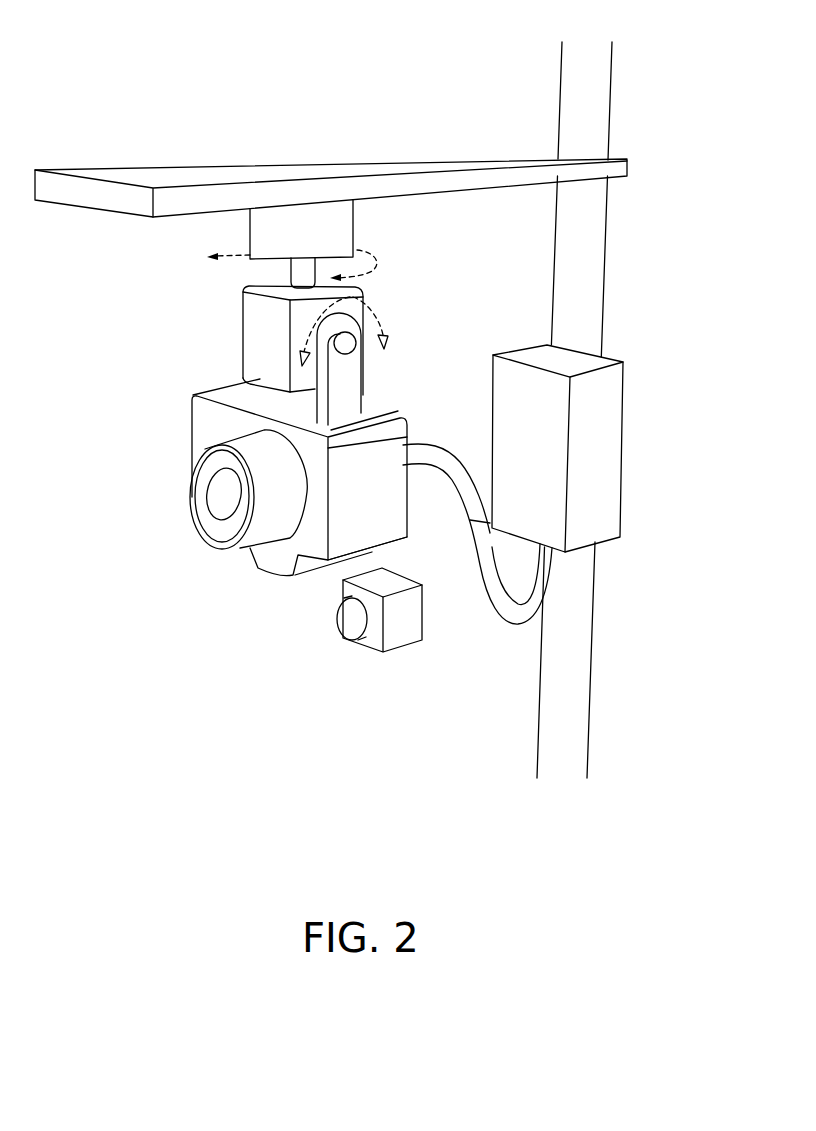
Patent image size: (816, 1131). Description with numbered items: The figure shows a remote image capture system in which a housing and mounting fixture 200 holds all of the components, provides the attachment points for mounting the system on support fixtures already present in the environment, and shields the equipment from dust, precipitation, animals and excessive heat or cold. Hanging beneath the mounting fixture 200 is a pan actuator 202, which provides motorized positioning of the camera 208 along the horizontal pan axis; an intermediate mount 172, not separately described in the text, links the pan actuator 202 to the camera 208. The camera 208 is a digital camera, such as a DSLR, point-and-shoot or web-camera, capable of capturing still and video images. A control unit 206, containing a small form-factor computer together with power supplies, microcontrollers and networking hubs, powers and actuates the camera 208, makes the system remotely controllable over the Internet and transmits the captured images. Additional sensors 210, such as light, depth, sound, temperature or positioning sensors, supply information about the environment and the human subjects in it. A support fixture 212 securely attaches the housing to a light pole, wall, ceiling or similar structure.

The housing and mounting fixture 200 is at (533, 158).
The pan actuator 202 is at (326, 233).
The pan-tilt bracket 172 is at (250, 338).
The control unit 206 is at (598, 461).
The camera 208 is at (280, 557).
The additional sensors 210 is at (406, 644).
The support fixture 212 is at (591, 712).